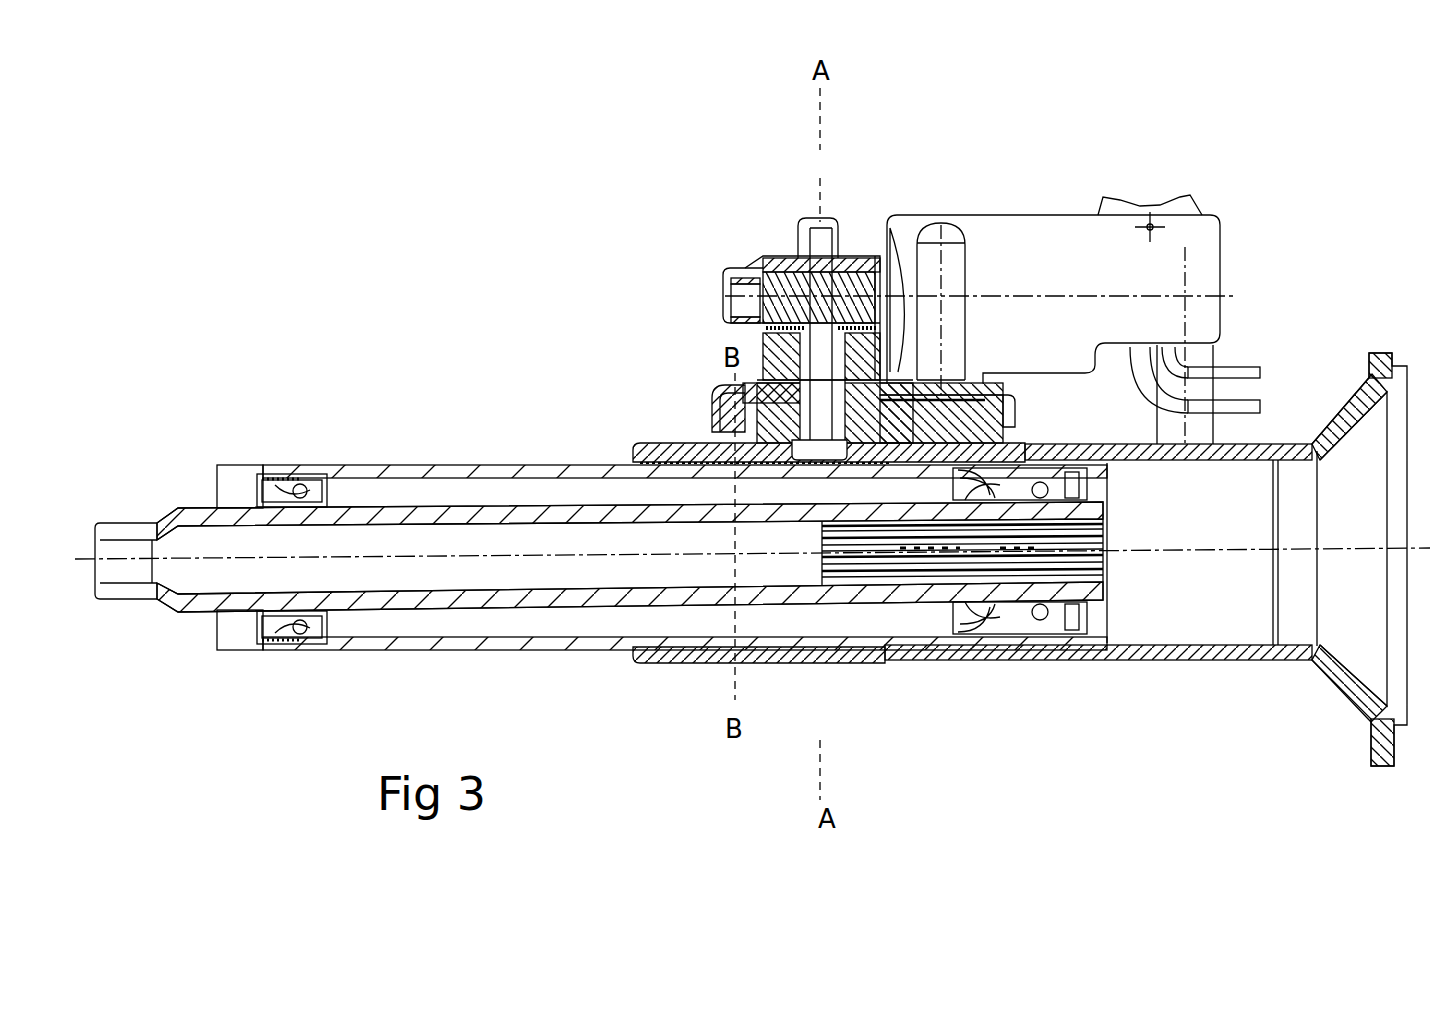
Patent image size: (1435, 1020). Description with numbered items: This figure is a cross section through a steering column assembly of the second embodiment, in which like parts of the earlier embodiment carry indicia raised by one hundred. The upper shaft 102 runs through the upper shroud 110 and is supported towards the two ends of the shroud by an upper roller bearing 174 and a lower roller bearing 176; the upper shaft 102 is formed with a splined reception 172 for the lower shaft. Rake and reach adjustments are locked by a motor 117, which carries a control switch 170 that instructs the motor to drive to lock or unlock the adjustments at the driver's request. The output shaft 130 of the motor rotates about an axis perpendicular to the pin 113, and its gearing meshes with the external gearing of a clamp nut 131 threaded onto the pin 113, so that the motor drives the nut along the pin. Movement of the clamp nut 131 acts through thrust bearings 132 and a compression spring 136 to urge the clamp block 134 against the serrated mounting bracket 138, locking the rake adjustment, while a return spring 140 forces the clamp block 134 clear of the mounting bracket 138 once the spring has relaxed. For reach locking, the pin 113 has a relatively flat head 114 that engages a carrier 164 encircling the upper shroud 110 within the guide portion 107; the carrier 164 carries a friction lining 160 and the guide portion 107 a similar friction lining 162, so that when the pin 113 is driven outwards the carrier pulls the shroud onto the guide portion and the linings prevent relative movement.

The upper shaft 102 is at (577, 608).
The guide portion 107 is at (670, 443).
The upper shroud 110 is at (462, 648).
The pin 113 is at (825, 295).
The flat head 114 is at (983, 437).
The motor 117 is at (977, 215).
The output shaft 130 is at (878, 250).
The clamp nut 131 is at (760, 290).
The thrust bearings 132 is at (767, 265).
The clamp block 134 is at (890, 292).
The compression spring 136 is at (762, 352).
The mounting bracket 138 is at (725, 387).
The return spring 140 is at (762, 362).
The friction lining 160 is at (778, 663).
The friction lining 162 is at (645, 443).
The carrier 164 is at (821, 440).
The control switch 170 is at (1197, 198).
The splined reception 172 is at (1107, 565).
The upper roller bearing 174 is at (282, 645).
The lower roller bearing 176 is at (1015, 628).